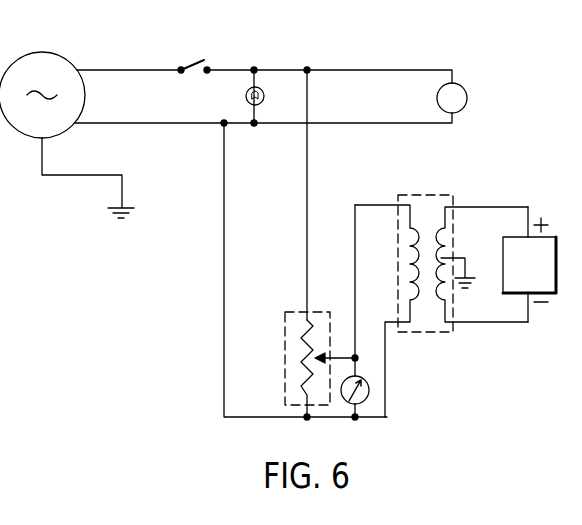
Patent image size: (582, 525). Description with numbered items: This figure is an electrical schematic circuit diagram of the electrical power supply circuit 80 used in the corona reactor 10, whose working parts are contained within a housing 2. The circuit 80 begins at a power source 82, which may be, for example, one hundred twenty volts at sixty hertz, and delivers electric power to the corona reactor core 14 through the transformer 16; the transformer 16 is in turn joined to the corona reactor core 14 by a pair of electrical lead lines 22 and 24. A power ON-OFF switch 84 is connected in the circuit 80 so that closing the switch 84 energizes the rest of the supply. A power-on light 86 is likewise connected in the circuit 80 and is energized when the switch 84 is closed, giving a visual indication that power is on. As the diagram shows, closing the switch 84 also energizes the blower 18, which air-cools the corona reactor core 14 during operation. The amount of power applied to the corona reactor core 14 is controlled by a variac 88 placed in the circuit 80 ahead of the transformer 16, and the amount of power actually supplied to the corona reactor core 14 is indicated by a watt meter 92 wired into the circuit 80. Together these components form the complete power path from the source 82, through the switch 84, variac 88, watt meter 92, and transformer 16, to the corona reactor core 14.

The power source 82 is at (62, 57).
The power ON-OFF switch 84 is at (240, 52).
The power-on light 86 is at (246, 97).
The blower 18 is at (468, 93).
The transformer 16 is at (427, 195).
The electrical lead line 24 is at (511, 207).
The electrical lead line 22 is at (473, 322).
The corona reactor core 14 is at (552, 296).
The variac 88 is at (285, 330).
The watt meter 92 is at (369, 393).
The electrical power supply circuit 80 is at (181, 233).
The corona reactor 10 is at (0, 385).
The housing 2 is at (6, 448).